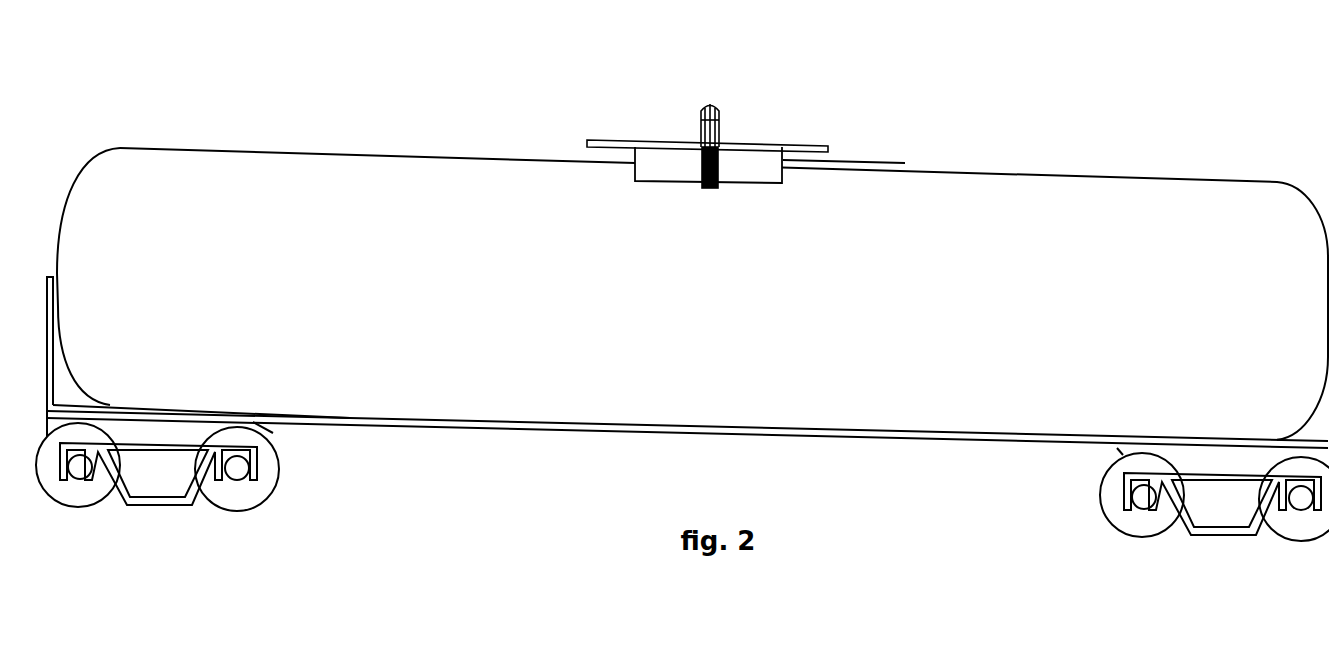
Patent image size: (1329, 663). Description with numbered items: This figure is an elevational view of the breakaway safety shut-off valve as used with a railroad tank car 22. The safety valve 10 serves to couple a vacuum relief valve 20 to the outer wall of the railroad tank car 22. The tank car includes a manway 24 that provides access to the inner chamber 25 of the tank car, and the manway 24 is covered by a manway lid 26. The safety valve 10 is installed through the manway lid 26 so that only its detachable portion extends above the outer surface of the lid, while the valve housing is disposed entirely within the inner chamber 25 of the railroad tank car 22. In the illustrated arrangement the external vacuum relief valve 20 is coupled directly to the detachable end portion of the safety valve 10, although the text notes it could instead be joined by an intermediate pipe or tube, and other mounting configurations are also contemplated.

The safety valve 10 is at (727, 168).
The vacuum relief valve 20 is at (692, 113).
The railroad tank car 22 is at (1098, 175).
The manway 24 is at (905, 163).
The inner chamber 25 is at (838, 242).
The manway lid 26 is at (610, 140).